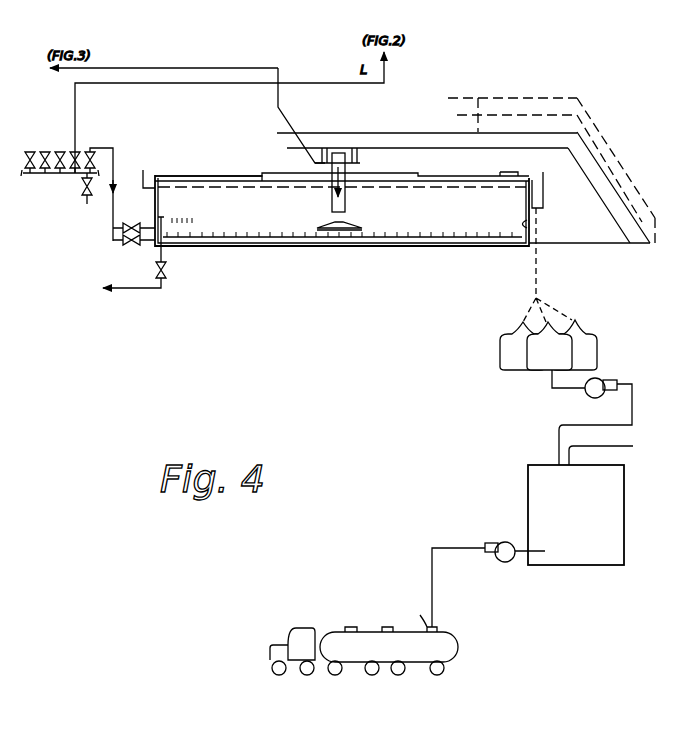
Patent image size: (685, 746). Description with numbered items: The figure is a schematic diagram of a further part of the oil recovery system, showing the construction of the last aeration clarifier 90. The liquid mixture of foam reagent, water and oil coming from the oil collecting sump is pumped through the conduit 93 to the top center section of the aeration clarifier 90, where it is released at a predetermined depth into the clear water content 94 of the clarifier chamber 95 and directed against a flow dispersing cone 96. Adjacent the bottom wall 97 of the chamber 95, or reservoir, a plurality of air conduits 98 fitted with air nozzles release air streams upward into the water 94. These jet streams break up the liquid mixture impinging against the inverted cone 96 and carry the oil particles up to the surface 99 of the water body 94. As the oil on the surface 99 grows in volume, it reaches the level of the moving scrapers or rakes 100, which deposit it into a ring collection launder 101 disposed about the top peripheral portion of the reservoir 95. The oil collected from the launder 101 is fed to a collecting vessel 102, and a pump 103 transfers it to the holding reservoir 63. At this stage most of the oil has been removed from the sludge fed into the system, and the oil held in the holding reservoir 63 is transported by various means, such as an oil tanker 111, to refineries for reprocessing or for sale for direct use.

The holding reservoir 63 is at (543, 485).
The last aeration clarifier 90 is at (545, 216).
The conduit 93 is at (292, 128).
The clear water content 94 is at (300, 211).
The clarifier chamber 95 is at (530, 228).
The flow dispersing cone 96 is at (340, 222).
The bottom wall 97 is at (425, 238).
The air conduits 98 is at (217, 248).
The surface 99 is at (213, 188).
The moving scrapers or rakes 100 is at (487, 177).
The ring collection launder 101 is at (541, 187).
The collecting vessel 102 is at (582, 338).
The pump 103 is at (593, 383).
The oil tanker 111 is at (447, 642).